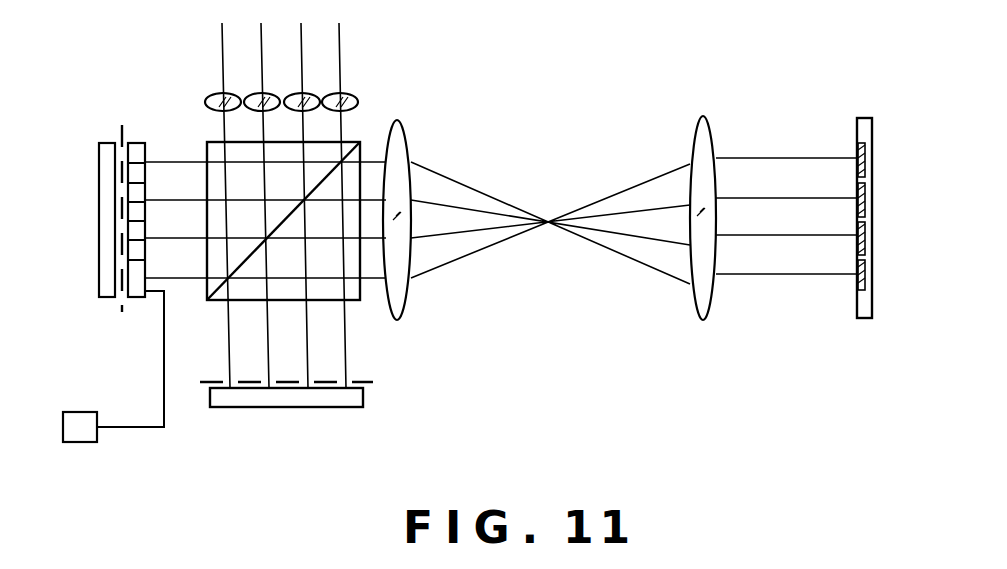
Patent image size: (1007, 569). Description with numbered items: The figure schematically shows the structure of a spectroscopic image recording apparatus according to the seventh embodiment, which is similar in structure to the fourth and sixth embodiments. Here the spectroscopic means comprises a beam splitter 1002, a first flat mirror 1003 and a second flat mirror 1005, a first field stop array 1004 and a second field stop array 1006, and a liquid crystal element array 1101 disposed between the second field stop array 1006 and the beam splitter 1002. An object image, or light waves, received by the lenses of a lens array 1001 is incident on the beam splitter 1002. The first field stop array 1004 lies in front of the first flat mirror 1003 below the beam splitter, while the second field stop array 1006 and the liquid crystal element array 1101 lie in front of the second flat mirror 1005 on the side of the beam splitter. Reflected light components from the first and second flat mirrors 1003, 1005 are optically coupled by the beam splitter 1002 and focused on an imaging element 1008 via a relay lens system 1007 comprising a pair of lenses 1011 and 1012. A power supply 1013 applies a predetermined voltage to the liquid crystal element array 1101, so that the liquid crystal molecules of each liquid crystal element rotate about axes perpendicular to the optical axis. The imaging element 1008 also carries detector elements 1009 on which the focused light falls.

The lens array 1001 is at (365, 97).
The beam splitter 1002 is at (211, 303).
The first flat mirror 1003 is at (302, 407).
The first field stop array 1004 is at (378, 381).
The second flat mirror 1005 is at (98, 157).
The second field stop array 1006 is at (122, 125).
The relay lens system 1007 is at (570, 120).
The imaging element 1008 is at (857, 118).
The detector elements 1009 is at (866, 286).
The lens 1011 is at (413, 142).
The lens 1012 is at (714, 125).
The power supply 1013 is at (80, 442).
The liquid crystal element array 1101 is at (138, 298).